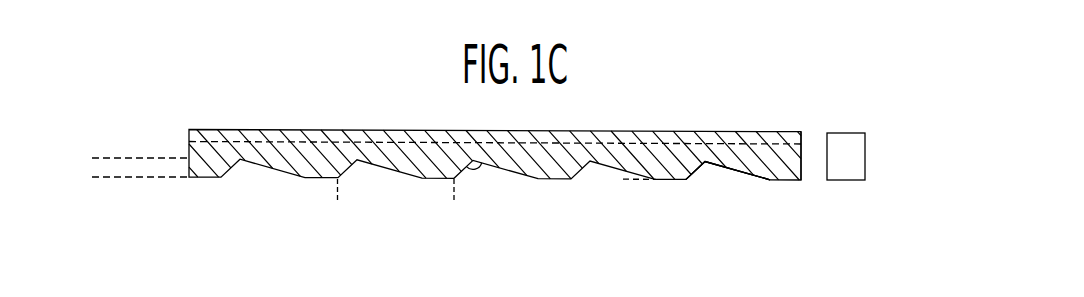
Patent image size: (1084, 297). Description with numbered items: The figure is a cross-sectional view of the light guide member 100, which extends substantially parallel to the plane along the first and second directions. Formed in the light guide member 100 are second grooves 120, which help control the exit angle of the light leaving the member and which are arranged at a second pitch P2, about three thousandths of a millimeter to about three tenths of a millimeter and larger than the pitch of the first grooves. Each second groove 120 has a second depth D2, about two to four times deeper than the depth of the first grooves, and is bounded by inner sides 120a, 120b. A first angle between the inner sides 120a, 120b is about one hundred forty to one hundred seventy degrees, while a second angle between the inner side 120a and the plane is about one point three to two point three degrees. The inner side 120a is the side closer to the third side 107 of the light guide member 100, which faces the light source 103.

The light guide member 100 is at (201, 150).
The light source 103 is at (848, 180).
The third side 107 is at (801, 150).
The second grooves 120 is at (705, 163).
The inner side 120a is at (742, 175).
The inner side 120b is at (698, 173).
The second depth D2 is at (112, 205).
The second pitch P2 is at (454, 192).